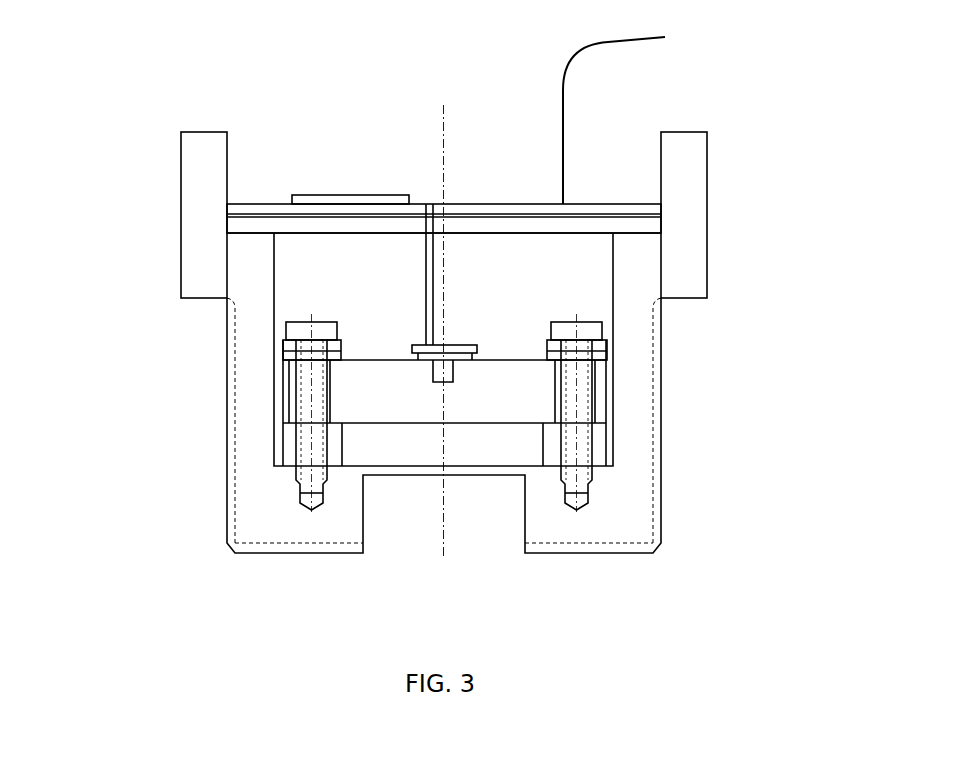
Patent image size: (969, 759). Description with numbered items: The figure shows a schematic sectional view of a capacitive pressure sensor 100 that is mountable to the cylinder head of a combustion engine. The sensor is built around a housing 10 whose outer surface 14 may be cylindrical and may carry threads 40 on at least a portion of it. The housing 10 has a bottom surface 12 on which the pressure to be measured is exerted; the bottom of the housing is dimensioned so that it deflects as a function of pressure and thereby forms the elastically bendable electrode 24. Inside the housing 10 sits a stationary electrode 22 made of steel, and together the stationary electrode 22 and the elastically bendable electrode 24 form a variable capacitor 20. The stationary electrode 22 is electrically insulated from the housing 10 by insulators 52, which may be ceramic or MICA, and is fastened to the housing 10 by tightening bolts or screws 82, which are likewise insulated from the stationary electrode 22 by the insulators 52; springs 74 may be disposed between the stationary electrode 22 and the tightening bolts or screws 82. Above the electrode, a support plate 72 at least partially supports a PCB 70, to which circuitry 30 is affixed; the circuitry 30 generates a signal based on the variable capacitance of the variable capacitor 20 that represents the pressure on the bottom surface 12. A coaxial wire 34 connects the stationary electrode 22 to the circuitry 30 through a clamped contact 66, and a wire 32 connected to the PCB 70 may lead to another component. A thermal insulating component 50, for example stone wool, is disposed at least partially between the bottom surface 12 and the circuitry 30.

The capacitive pressure sensor 100 is at (343, 150).
The housing 10 is at (279, 520).
The bottom surface 12 is at (457, 475).
The outer surface 14 is at (181, 217).
The variable capacitor 20 is at (432, 451).
The stationary electrode 22 is at (501, 400).
The elastically bendable electrode 24 is at (433, 472).
The circuitry 30 is at (290, 200).
The wire 32 is at (563, 117).
The coaxial wire 34 is at (426, 290).
The threads 40 is at (228, 492).
The thermal insulating component 50 is at (520, 291).
The insulators 52 is at (287, 360).
The clamped contact 66 is at (477, 350).
The PCB 70 is at (650, 209).
The support plate 72 is at (650, 222).
The springs 74 is at (290, 350).
The tightening bolts or screws 82 is at (295, 332).